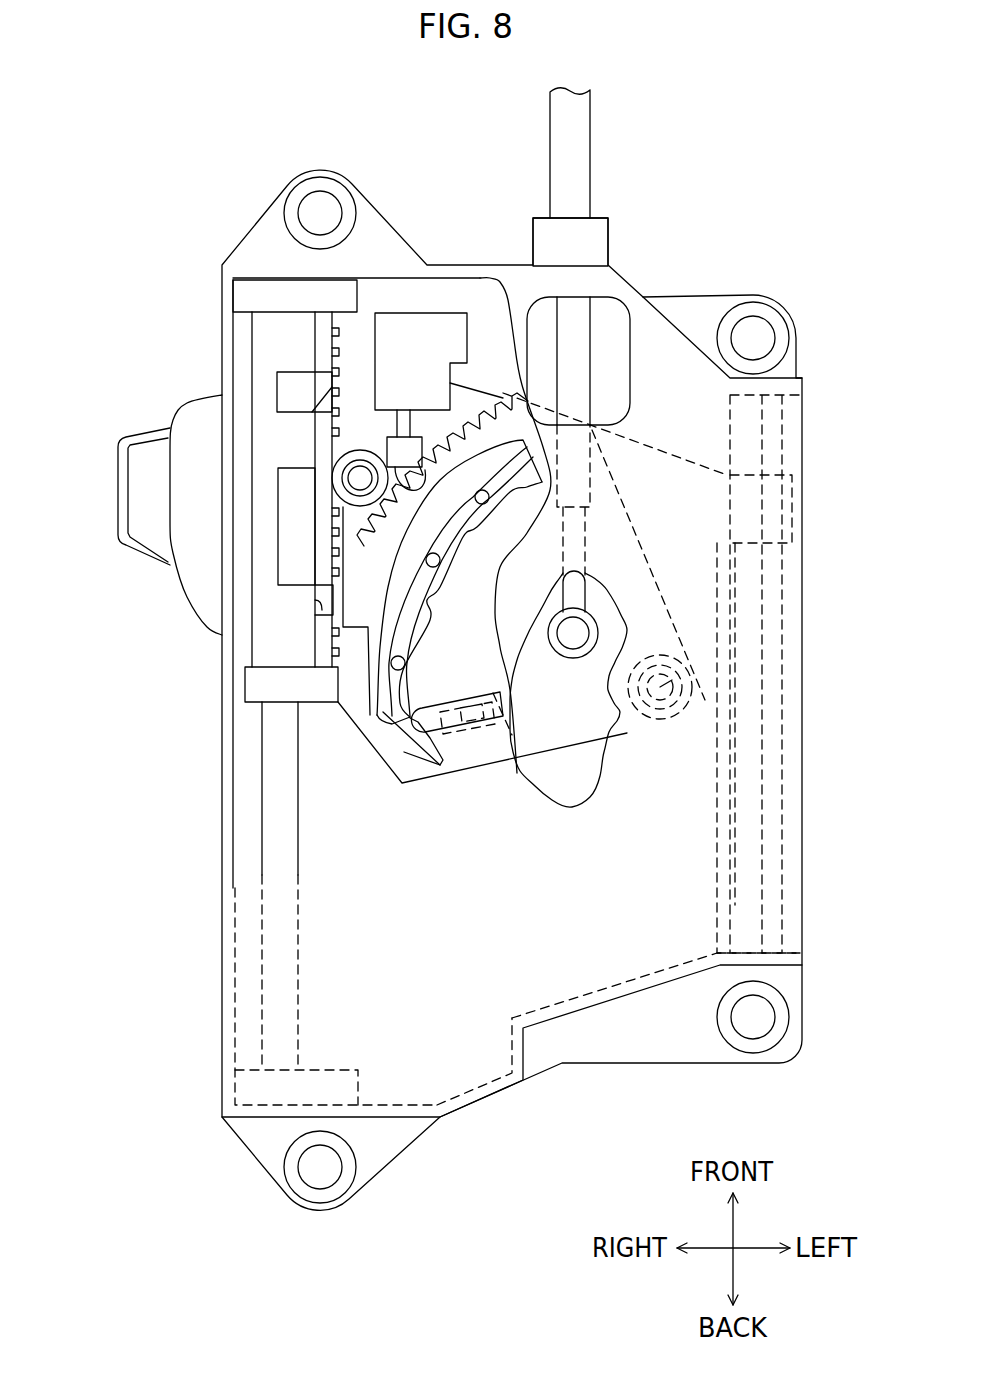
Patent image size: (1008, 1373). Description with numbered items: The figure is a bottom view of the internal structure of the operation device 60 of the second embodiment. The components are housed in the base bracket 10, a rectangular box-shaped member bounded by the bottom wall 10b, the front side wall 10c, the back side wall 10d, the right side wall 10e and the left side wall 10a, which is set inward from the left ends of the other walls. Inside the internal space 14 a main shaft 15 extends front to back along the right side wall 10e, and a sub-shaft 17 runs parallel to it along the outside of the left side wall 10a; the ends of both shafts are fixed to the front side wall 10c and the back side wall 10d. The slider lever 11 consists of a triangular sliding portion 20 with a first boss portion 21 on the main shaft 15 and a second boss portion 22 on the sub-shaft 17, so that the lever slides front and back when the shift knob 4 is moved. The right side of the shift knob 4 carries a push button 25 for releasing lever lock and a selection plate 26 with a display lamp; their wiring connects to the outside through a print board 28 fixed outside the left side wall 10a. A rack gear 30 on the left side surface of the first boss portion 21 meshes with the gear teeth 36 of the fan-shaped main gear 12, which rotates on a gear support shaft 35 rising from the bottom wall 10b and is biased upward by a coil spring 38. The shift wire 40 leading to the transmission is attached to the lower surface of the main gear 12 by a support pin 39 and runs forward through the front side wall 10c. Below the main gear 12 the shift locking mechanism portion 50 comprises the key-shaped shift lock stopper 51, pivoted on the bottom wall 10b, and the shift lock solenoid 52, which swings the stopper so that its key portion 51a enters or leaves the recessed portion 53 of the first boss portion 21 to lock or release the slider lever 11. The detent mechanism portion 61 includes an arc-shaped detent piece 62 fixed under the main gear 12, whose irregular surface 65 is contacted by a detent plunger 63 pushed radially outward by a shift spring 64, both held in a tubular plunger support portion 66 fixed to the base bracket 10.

The shift knob 4 is at (245, 420).
The base bracket 10 is at (737, 293).
The left side wall 10a is at (735, 920).
The bottom wall 10b is at (628, 945).
The front side wall 10c is at (481, 263).
The back side wall 10d is at (388, 1117).
The right side wall 10e is at (235, 1090).
The slider lever 11 is at (252, 325).
The main gear 12 is at (617, 560).
The internal space 14 is at (330, 838).
The main shaft 15 is at (262, 1002).
The sub-shaft 17 is at (770, 778).
The sliding portion 20 is at (677, 470).
The first boss portion 21 is at (315, 570).
The second boss portion 22 is at (768, 500).
The push button 25 is at (128, 492).
The selection plate 26 is at (118, 452).
The print board 28 is at (735, 845).
The rack gear 30 is at (373, 360).
The gear support shaft 35 is at (665, 688).
The gear teeth 36 is at (503, 393).
The coil spring 38 is at (692, 710).
The support pin 39 is at (575, 633).
The shift wire 40 is at (590, 126).
The shift locking mechanism portion 50 is at (360, 445).
The shift lock stopper 51 is at (320, 530).
The key portion 51a is at (313, 610).
The shift lock solenoid 52 is at (405, 330).
The recessed portion 53 is at (262, 592).
The operation device 60 is at (752, 148).
The detent mechanism portion 61 is at (404, 752).
The detent piece 62 is at (383, 712).
The detent plunger 63 is at (448, 730).
The shift spring 64 is at (503, 727).
The irregular surface 65 is at (560, 745).
The tubular plunger support portion 66 is at (467, 737).